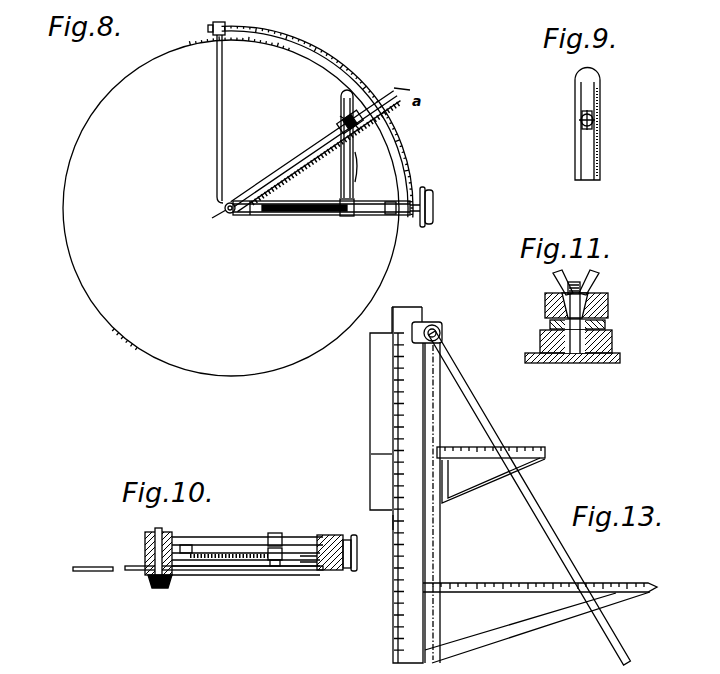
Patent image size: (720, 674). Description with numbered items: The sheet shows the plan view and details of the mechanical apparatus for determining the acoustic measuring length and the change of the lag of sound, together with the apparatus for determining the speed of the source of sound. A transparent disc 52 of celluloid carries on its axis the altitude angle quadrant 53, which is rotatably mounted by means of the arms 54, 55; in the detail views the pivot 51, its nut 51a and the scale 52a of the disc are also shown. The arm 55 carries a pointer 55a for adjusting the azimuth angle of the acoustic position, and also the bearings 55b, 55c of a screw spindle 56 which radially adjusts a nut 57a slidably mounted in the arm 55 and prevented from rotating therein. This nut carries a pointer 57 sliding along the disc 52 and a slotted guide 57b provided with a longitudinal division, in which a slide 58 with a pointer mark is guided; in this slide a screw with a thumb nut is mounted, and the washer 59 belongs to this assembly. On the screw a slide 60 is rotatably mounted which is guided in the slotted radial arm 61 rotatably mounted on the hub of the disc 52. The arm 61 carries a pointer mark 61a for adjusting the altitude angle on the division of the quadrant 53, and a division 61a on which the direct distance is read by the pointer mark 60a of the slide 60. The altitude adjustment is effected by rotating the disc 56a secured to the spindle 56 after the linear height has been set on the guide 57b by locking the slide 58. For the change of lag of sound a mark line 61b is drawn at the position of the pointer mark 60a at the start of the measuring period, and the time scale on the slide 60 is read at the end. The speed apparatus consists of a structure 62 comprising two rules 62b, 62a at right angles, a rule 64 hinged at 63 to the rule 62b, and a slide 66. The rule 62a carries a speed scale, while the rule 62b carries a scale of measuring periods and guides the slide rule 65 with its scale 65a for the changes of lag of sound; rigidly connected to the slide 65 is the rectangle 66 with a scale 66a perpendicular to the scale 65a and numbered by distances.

In FIG. 8, the pivot pin 51 is at (230, 213).
In FIG. 10, the pivot pin 51 is at (146, 540).
In FIG. 10, the pivot nut 51a is at (166, 588).
In FIG. 8, the transparent disc 52 is at (100, 125).
In FIG. 11, the transparent disc 52 is at (595, 363).
In FIG. 10, the transparent disc 52 is at (130, 571).
In FIG. 8, the dial plate scale 52a is at (126, 336).
In FIG. 10, the dial plate scale 52a is at (84, 571).
In FIG. 8, the altitude angle quadrant 53 is at (277, 32).
In FIG. 8, the arm 54 is at (217, 127).
In FIG. 8, the arm 55 is at (302, 216).
In FIG. 10, the arm 55 is at (238, 537).
In FIG. 8, the pointer 55a is at (396, 204).
In FIG. 10, the pointer 55a is at (318, 571).
In FIG. 10, the bearing 55b is at (186, 545).
In FIG. 10, the bearing 55c is at (332, 531).
In FIG. 10, the screw spindle 56 is at (205, 553).
In FIG. 8, the disc 56a is at (426, 228).
In FIG. 10, the disc 56a is at (352, 569).
In FIG. 10, the pointer 57 is at (278, 533).
In FIG. 8, the nut 57a is at (347, 216).
In FIG. 10, the nut 57a is at (274, 567).
In FIG. 8, the slotted guide 57b is at (341, 174).
In FIG. 9, the slotted guide 57b is at (601, 171).
In FIG. 11, the slotted guide 57b is at (545, 302).
In FIG. 9, the slide 58 is at (594, 123).
In FIG. 11, the slide 58 is at (600, 293).
In FIG. 9, the washer 59 is at (581, 120).
In FIG. 11, the washer 59 is at (550, 324).
In FIG. 8, the slide 60 is at (337, 124).
In FIG. 11, the slide 60 is at (575, 353).
In FIG. 8, the pointer mark 60a is at (358, 128).
In FIG. 8, the slotted radial arm 61 is at (280, 172).
In FIG. 11, the slotted radial arm 61 is at (540, 344).
In FIG. 10, the slotted radial arm 61 is at (240, 566).
In FIG. 8, the pointer mark and division 61a is at (368, 100).
In FIG. 8, the mark line 61b is at (342, 118).
In FIG. 13, the structure 62 is at (405, 613).
In FIG. 13, the rule 62a is at (492, 583).
In FIG. 13, the rule 62b is at (398, 520).
In FIG. 13, the hinge 63 is at (440, 328).
In FIG. 13, the rule 64 is at (568, 562).
In FIG. 13, the slide rule 65 is at (370, 388).
In FIG. 13, the scale 65a is at (371, 455).
In FIG. 13, the slide 66 is at (535, 462).
In FIG. 13, the scale 66a is at (452, 447).